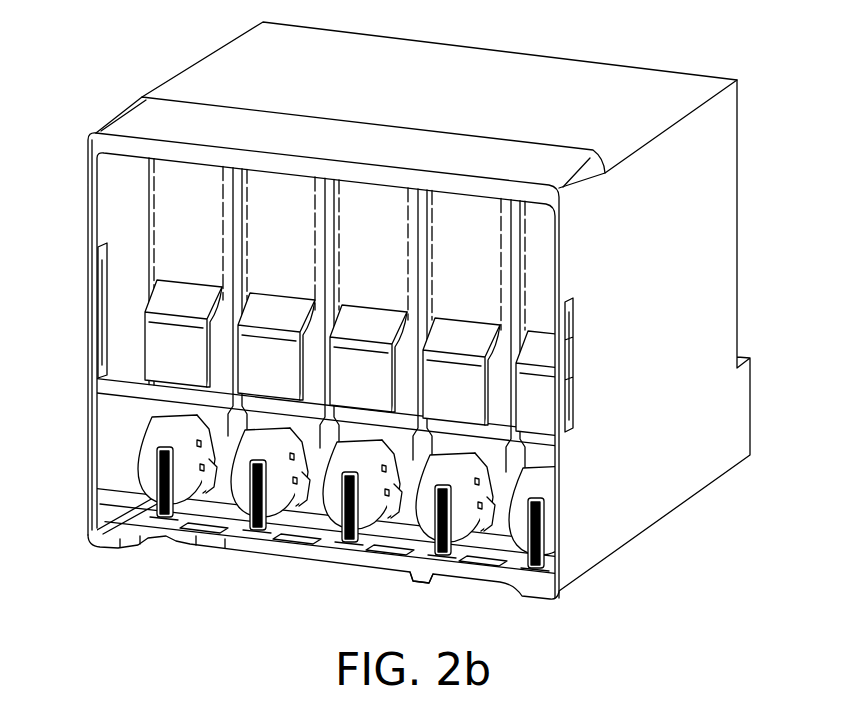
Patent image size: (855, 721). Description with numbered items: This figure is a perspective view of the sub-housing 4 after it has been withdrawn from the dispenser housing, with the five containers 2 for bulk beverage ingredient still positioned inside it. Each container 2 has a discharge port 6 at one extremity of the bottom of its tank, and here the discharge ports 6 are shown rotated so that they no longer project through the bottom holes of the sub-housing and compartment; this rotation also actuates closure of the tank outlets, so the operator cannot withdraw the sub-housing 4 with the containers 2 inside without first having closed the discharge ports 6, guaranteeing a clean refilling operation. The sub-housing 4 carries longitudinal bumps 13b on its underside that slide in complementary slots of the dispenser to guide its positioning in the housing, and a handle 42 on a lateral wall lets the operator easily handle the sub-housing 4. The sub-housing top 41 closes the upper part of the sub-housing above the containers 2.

The container 2 is at (317, 366).
The sub-housing 4 is at (724, 231).
The discharge port 6 is at (165, 515).
The longitudinal bump 13b is at (292, 573).
The sub-housing top 41 is at (588, 75).
The handle 42 is at (567, 390).